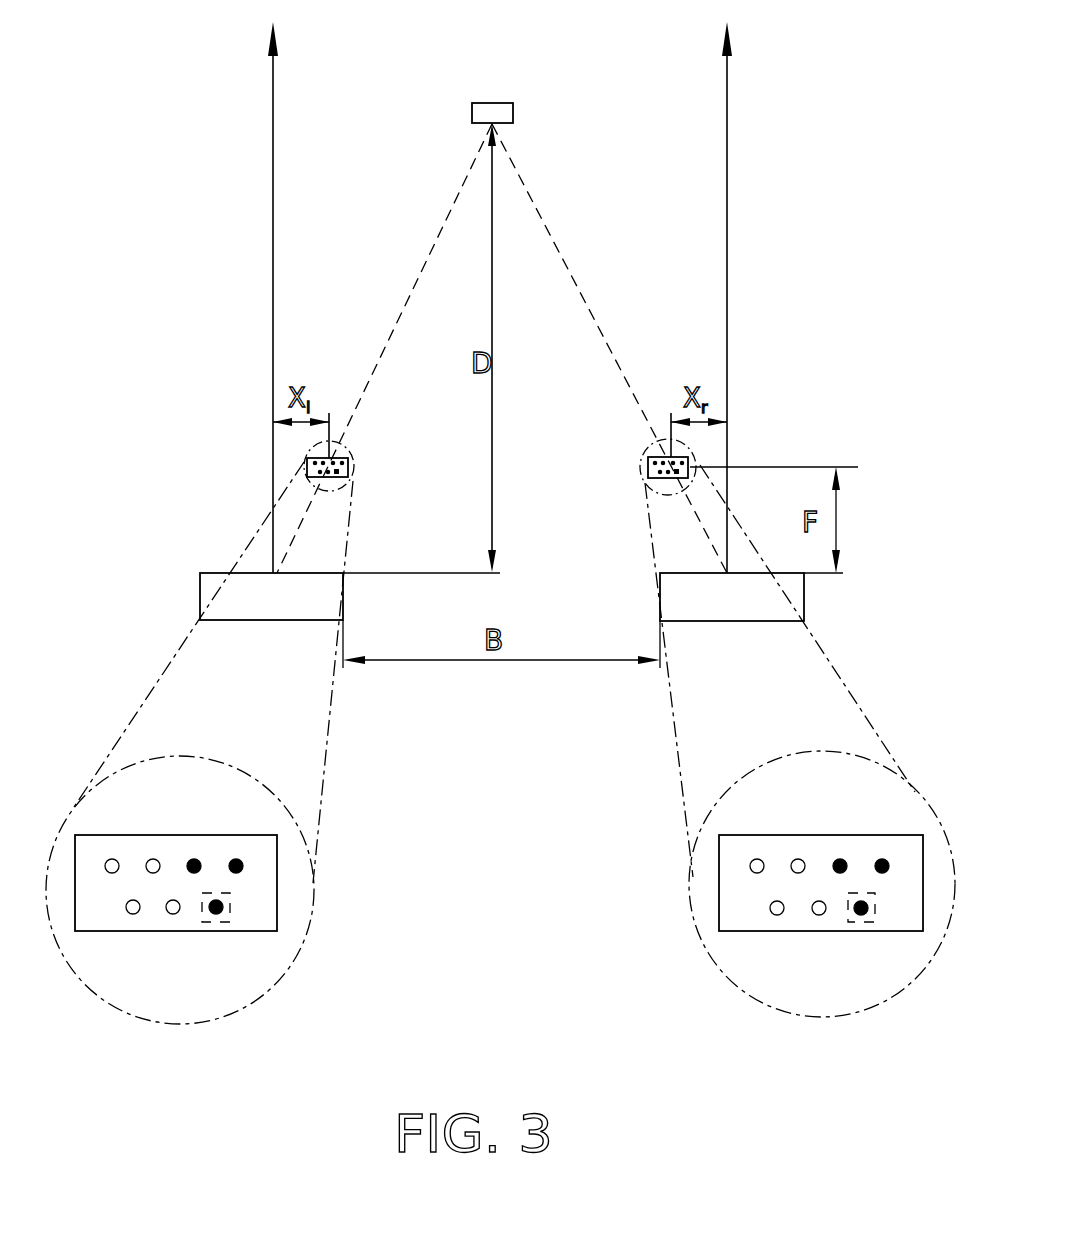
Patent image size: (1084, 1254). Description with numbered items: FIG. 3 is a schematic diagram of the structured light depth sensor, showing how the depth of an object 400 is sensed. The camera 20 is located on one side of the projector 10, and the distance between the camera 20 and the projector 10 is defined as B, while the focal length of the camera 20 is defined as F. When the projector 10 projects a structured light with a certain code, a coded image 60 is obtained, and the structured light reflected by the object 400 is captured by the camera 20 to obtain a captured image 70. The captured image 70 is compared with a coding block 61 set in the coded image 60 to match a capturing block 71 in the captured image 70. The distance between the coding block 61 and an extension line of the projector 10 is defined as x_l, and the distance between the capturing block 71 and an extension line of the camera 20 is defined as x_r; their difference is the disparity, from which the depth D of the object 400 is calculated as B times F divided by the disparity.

The object 400 is at (501, 103).
The projector 10 is at (278, 620).
The camera 20 is at (766, 621).
The coded image 60 is at (350, 480).
The captured image 70 is at (641, 482).
The coding block 61 is at (231, 900).
The capturing block 71 is at (864, 922).